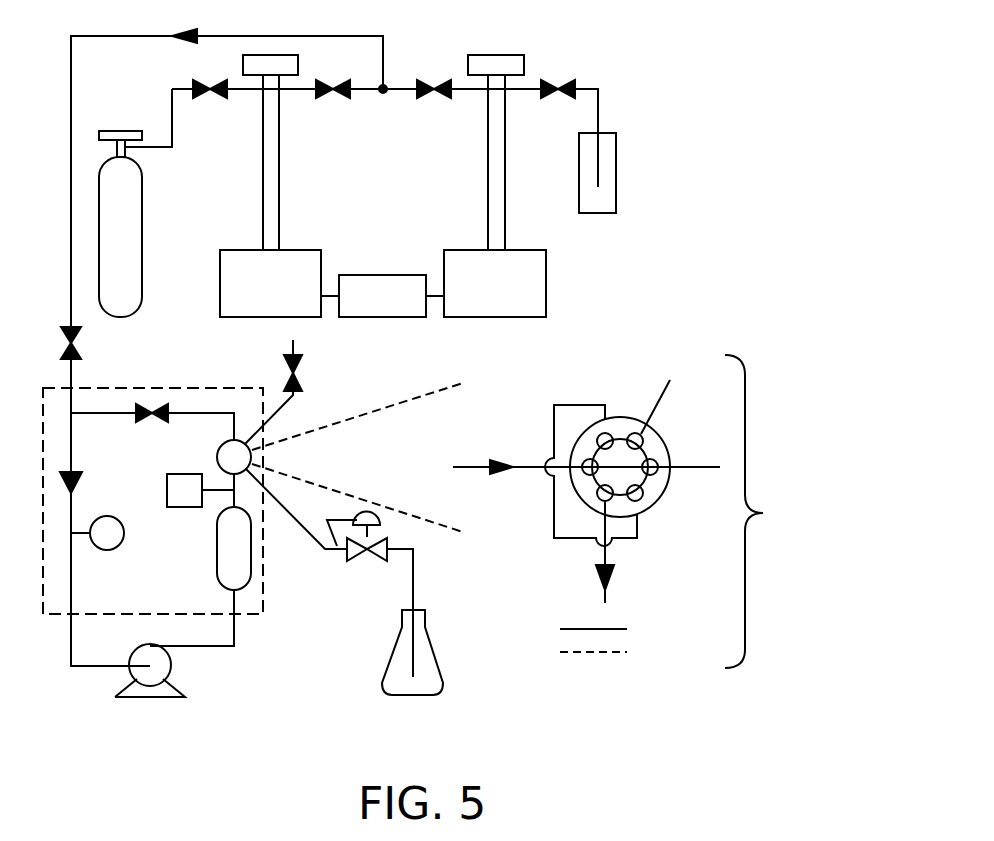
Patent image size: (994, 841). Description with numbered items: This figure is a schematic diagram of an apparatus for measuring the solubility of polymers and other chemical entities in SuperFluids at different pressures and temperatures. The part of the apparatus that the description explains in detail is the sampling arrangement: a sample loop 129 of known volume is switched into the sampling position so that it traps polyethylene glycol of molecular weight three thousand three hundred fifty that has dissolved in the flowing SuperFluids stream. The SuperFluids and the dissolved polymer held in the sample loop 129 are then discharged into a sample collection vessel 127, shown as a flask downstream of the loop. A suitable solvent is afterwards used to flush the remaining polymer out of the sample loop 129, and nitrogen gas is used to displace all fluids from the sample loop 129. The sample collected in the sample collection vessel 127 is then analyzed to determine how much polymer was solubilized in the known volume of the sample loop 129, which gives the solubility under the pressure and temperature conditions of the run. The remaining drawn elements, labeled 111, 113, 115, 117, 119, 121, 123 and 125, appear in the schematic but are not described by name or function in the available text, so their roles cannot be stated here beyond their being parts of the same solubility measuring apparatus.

The supercritical fluid processing system 111 is at (738, 96).
The vessel 113 is at (217, 538).
The pump 115 is at (147, 700).
The mixing tee / switching valve 117 is at (252, 457).
The enclosure (heated zone) 119 is at (258, 616).
The first syringe pump 121 is at (220, 300).
The second syringe pump 123 is at (546, 283).
The pump controller 125 is at (383, 275).
The sample collection vessel 127 is at (433, 650).
The sample loop 129 is at (554, 512).